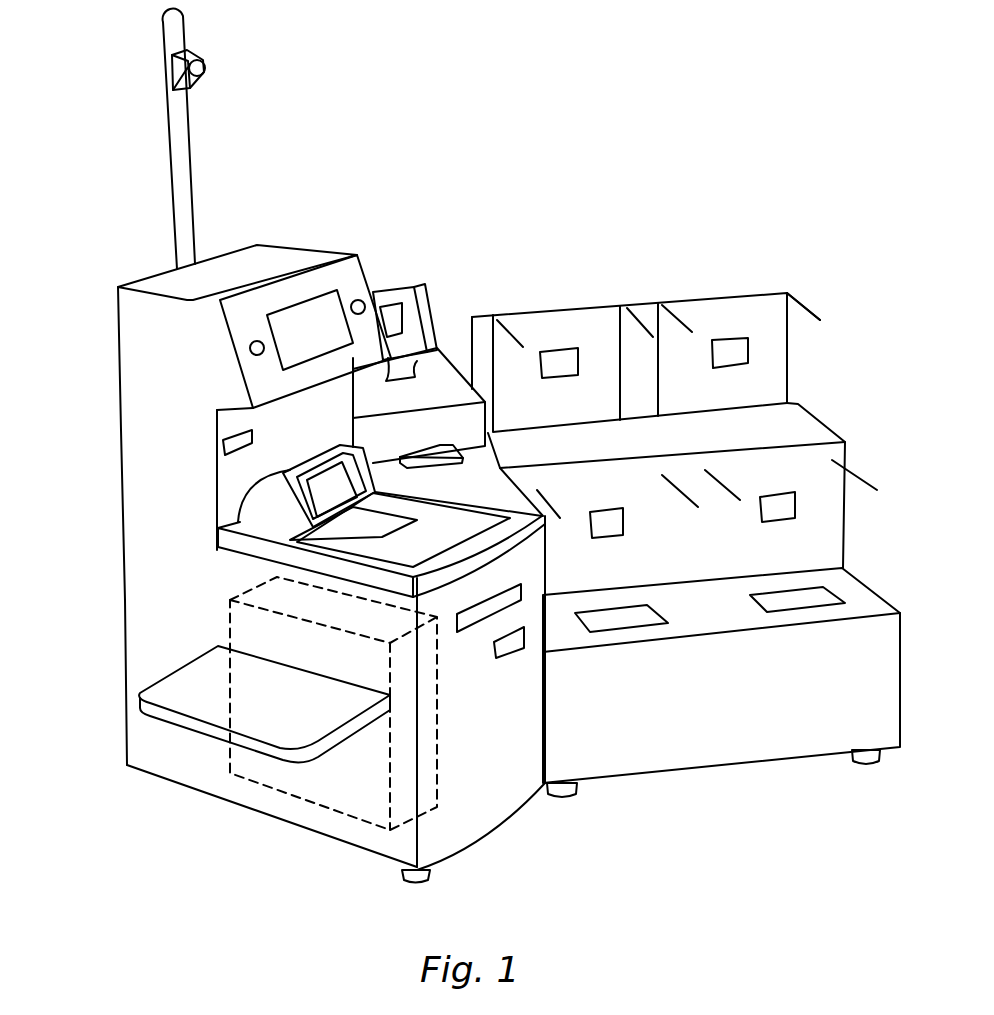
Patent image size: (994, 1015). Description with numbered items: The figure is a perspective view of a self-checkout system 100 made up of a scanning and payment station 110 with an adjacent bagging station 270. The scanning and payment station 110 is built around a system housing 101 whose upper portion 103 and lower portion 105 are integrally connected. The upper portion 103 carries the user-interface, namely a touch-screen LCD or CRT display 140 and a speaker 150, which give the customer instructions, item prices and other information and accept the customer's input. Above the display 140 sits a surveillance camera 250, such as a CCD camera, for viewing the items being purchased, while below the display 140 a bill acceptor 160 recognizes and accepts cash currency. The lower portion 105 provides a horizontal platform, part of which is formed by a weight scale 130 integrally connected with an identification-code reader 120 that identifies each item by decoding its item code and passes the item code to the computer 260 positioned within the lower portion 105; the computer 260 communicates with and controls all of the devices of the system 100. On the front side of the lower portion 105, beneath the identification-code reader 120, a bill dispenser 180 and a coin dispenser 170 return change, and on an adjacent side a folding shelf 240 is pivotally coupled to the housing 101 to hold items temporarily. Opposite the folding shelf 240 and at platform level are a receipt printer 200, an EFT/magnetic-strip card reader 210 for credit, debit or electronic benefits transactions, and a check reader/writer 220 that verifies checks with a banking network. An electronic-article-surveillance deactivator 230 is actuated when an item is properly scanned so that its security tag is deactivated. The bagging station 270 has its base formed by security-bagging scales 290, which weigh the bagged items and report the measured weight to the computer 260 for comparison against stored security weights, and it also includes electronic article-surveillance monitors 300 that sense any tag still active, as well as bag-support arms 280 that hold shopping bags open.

The self-checkout system 100 is at (419, 163).
The scanning and payment station 110 is at (114, 554).
The system housing 101 is at (135, 481).
The upper portion 103 is at (133, 353).
The lower portion 105 is at (143, 655).
The identification-code reader 120 is at (377, 525).
The weight scale 130 is at (392, 542).
The touch-screen LCD or CRT display 140 is at (296, 328).
The speaker 150 is at (357, 299).
The bill acceptor 160 is at (222, 448).
The coin dispenser 170 is at (509, 642).
The bill dispenser 180 is at (483, 616).
The receipt printer 200 is at (400, 367).
The EFT/magnetic-strip card reader 210 is at (429, 295).
The check reader/writer 220 is at (447, 444).
The electronic-article-surveillance deactivator 230 is at (302, 510).
The folding shelf 240 is at (282, 732).
The surveillance camera 250 is at (172, 68).
The computer 260 is at (338, 812).
The bagging station 270 is at (789, 281).
The bag-support arms 280 is at (825, 318).
The security-bagging scales 290 is at (785, 605).
The electronic article-surveillance monitors 300 is at (727, 345).